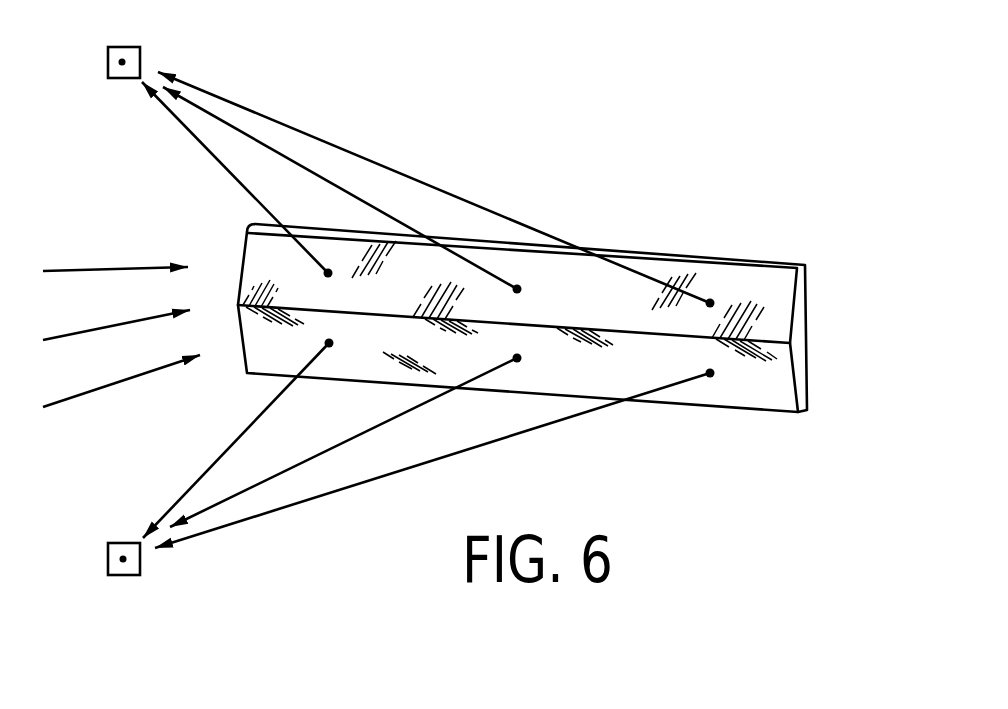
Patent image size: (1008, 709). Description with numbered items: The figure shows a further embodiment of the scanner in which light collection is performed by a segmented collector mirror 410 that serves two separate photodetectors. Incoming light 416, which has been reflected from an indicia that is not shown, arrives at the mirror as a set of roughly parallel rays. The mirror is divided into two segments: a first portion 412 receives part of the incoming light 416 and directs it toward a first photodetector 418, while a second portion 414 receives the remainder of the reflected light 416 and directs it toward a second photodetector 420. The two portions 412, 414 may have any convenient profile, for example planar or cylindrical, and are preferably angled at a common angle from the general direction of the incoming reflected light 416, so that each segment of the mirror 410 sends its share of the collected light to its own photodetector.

The segmented collector mirror 410 is at (582, 343).
The first portion 412 is at (745, 283).
The second portion 414 is at (767, 398).
The incoming light 416 is at (93, 392).
The first photodetector 418 is at (140, 56).
The second photodetector 420 is at (123, 575).